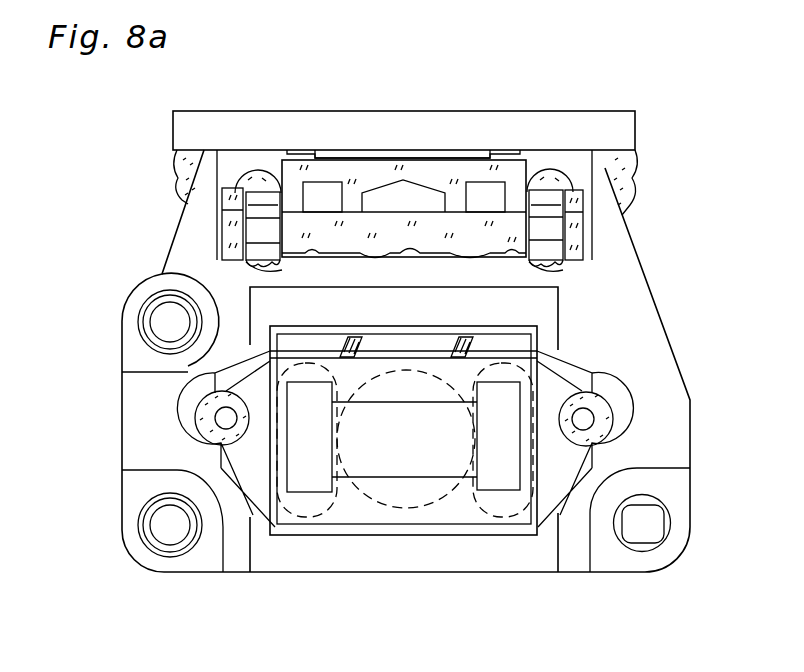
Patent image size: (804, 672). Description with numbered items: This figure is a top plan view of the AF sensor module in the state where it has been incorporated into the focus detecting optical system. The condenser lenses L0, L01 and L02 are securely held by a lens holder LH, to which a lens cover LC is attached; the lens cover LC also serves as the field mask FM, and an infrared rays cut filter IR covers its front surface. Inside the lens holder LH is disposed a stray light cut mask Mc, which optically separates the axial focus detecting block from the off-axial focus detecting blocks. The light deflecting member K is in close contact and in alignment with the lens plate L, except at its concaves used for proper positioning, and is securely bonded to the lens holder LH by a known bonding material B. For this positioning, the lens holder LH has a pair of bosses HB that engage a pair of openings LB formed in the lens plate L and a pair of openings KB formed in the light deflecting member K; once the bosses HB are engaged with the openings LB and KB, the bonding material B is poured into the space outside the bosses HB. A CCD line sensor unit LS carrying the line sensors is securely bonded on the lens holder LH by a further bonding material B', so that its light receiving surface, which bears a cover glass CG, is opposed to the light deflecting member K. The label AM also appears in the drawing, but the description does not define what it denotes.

The bonding material B is at (404, 249).
The bosses HB is at (260, 203).
The light deflecting member K is at (332, 168).
The cover glass CG is at (398, 150).
The lens plate L is at (468, 228).
The CCD line sensor unit LS is at (622, 130).
The bonding material B' is at (405, 152).
The openings KB is at (235, 205).
The openings LB is at (250, 238).
The adjustment mount AM is at (305, 264).
The lens cover LC is at (527, 305).
The stray light cut mask Mc is at (530, 348).
The lens holder LH is at (667, 377).
The field mask FM is at (287, 458).
The condenser lens L02 is at (297, 517).
The condenser lens L0 is at (383, 508).
The infrared rays cut filter IR is at (430, 525).
The condenser lens L01 is at (500, 518).